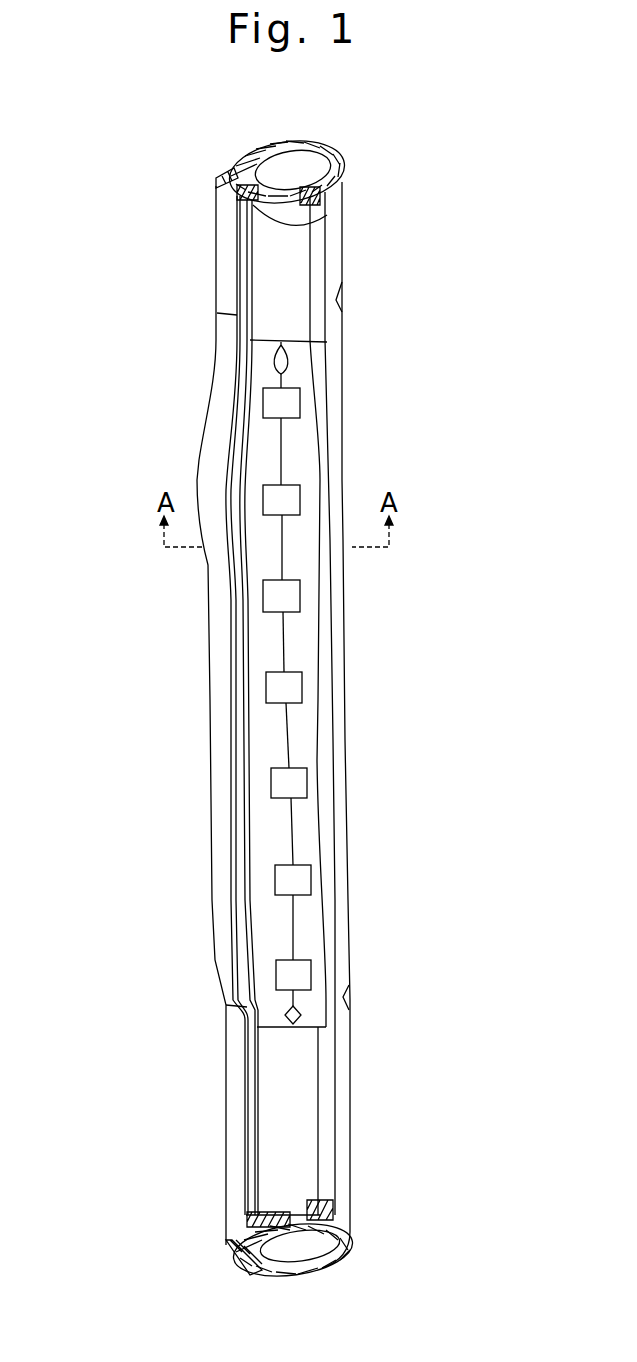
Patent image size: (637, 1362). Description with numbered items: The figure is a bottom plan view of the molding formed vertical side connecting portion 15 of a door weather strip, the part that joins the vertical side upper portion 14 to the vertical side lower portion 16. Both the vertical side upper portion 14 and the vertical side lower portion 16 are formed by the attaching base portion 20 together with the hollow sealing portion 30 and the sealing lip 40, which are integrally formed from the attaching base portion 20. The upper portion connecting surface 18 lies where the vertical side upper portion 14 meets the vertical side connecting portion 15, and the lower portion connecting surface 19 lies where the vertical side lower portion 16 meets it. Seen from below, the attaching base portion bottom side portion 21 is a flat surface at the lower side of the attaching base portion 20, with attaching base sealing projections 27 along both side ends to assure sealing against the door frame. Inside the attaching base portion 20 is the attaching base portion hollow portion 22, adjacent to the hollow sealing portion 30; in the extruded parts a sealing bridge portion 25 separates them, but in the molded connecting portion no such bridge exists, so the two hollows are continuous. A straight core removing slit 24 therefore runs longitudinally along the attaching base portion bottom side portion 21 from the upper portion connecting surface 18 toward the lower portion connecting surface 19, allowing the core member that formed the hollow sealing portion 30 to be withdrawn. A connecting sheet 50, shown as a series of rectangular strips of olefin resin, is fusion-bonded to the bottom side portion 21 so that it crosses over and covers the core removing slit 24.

The vertical side upper portion 14 is at (342, 331).
The vertical side connecting portion 15 is at (337, 690).
The vertical side lower portion 16 is at (342, 1084).
The upper portion connecting surface 18 is at (352, 304).
The lower portion connecting surface 19 is at (349, 1040).
The attaching base portion 20 is at (172, 707).
The attaching base portion bottom side portion 21 is at (271, 705).
The attaching base portion hollow portion 22 is at (192, 730).
The core removing slit 24 is at (270, 683).
The sealing bridge portion 25 is at (206, 708).
The attaching base sealing projections 27 is at (270, 703).
The hollow sealing portion 30 is at (392, 690).
The sealing lip 40 is at (158, 197).
The connecting sheet 50 is at (271, 687).